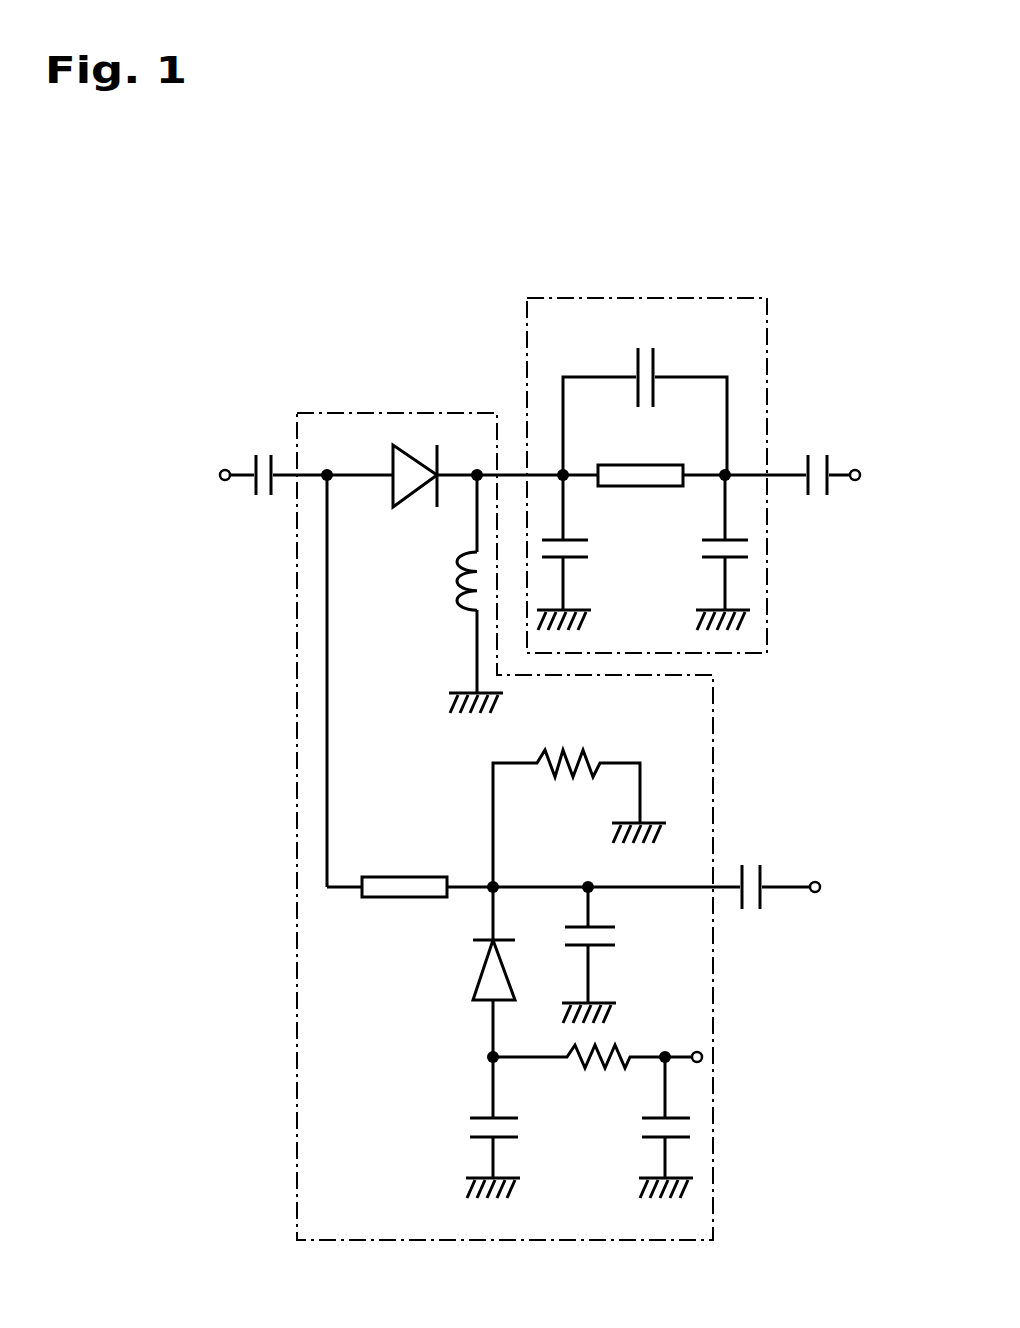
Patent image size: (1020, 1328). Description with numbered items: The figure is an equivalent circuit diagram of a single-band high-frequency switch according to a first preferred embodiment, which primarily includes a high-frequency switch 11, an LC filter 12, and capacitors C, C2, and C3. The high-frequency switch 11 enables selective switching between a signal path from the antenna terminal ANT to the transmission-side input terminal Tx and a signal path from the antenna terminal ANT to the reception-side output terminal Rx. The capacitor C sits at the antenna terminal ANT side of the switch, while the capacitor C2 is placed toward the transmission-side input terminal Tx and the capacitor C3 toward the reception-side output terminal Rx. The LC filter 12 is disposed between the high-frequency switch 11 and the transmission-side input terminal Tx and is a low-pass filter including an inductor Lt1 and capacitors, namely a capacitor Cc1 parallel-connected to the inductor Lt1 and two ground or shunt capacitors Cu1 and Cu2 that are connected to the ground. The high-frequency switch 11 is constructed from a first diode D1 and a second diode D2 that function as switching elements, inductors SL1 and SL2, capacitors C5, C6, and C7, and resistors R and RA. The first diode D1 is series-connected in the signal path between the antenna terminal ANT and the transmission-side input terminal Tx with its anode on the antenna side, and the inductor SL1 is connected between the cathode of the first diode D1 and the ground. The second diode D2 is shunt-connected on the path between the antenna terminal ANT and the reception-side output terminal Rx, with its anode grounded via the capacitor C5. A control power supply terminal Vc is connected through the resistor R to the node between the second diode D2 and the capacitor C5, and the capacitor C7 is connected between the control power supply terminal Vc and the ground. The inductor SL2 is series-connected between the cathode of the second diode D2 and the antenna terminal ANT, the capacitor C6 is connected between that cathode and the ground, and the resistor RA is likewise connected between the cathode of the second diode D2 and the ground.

The high-frequency switch 11 is at (377, 411).
The LC filter 12 is at (657, 296).
The antenna terminal ANT is at (196, 475).
The transmission-side input terminal Tx is at (875, 477).
The reception-side output terminal Rx is at (836, 889).
The control power supply terminal Vc is at (682, 1034).
The capacitor C is at (263, 453).
The first diode D1 is at (415, 497).
The inductor SL1 is at (446, 594).
The capacitor Cc1 is at (645, 411).
The inductor Lt1 is at (640, 496).
The ground capacitor Cu1 is at (592, 552).
The ground capacitor Cu2 is at (754, 552).
The capacitor C2 is at (817, 454).
The resistor RA is at (579, 795).
The inductor SL2 is at (404, 909).
The capacitor C3 is at (749, 866).
The capacitor C6 is at (613, 955).
The second diode D2 is at (473, 972).
The capacitor C5 is at (474, 1127).
The resistor R is at (579, 1080).
The capacitor C7 is at (647, 1127).